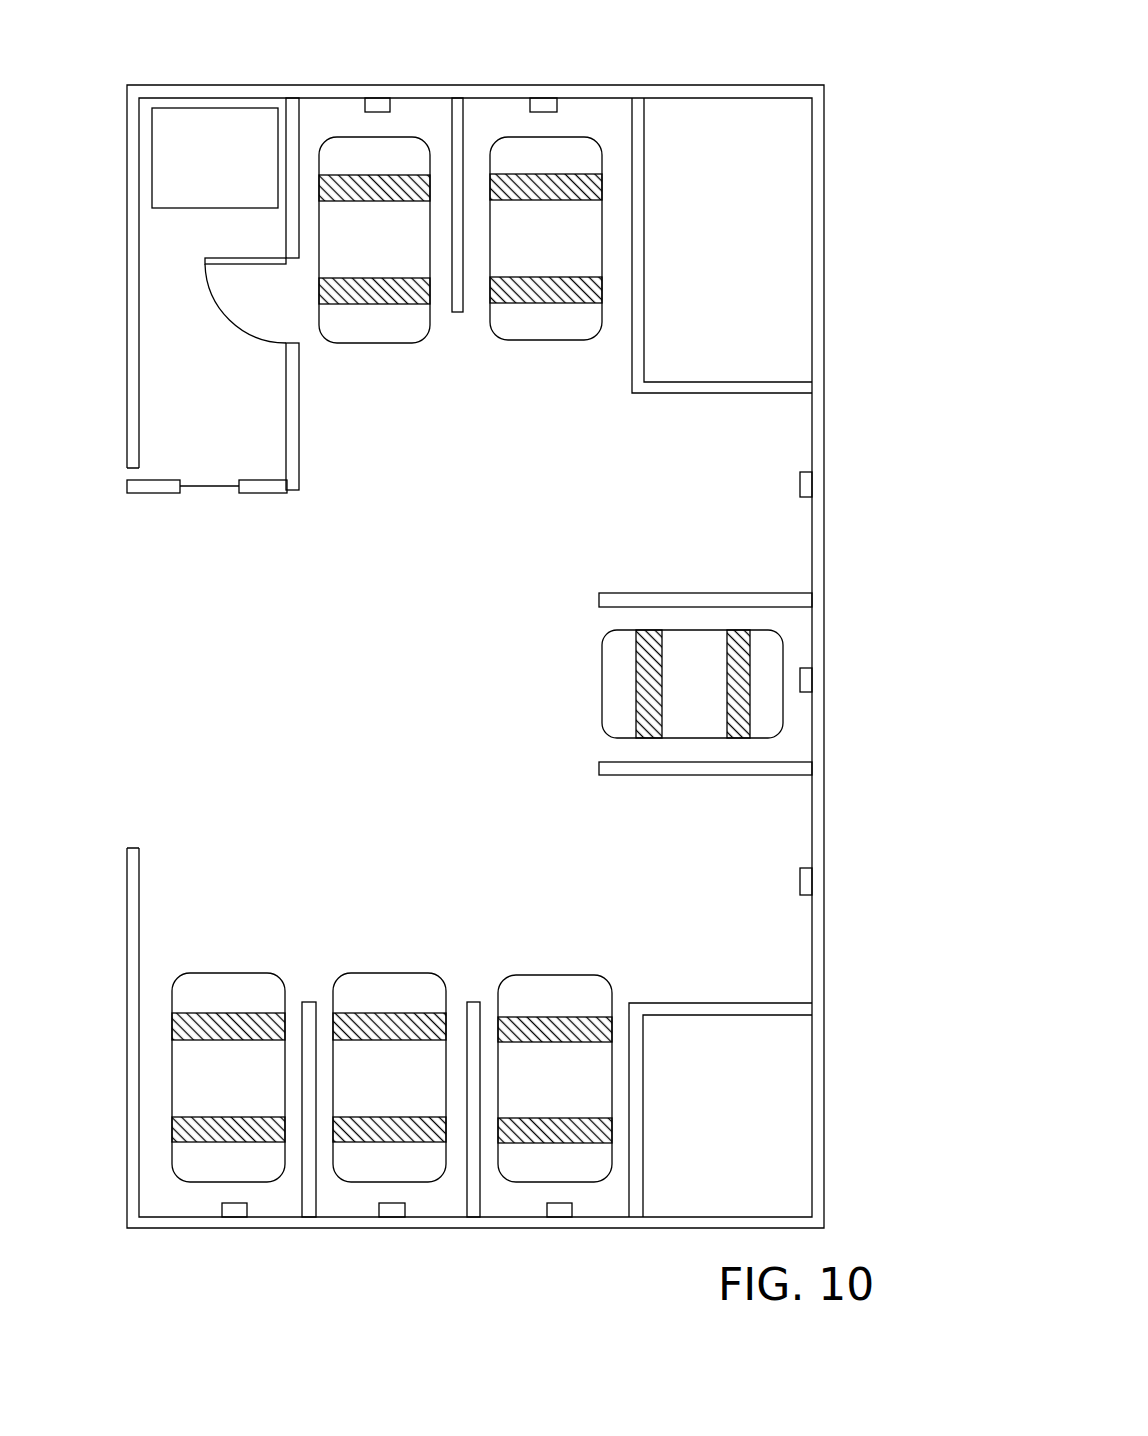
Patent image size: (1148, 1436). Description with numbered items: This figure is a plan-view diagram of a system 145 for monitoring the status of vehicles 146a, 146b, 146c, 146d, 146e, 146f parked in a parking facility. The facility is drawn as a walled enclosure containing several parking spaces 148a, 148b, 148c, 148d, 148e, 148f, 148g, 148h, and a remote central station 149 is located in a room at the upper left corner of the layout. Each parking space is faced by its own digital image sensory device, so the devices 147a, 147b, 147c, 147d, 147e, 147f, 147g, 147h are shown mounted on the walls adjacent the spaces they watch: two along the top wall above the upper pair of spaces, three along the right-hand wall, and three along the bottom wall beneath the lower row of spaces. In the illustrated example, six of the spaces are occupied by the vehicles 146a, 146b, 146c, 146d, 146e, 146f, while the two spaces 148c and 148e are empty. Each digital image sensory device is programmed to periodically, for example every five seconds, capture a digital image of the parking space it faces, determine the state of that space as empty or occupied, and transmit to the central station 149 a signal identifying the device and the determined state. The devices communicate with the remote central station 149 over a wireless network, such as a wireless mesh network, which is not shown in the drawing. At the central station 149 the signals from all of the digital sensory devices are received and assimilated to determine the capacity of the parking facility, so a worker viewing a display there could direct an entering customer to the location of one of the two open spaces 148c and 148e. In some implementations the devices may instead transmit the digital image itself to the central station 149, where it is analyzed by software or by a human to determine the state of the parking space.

The system 145 is at (634, 32).
The vehicle 146a is at (397, 254).
The vehicle 146b is at (570, 254).
The vehicle 146c is at (725, 690).
The vehicle 146d is at (580, 1088).
The vehicle 146e is at (413, 1088).
The vehicle 146f is at (250, 1088).
The digital image sensory device 147a is at (378, 102).
The digital image sensory device 147b is at (545, 102).
The digital image sensory device 147c is at (812, 485).
The digital image sensory device 147d is at (812, 680).
The digital image sensory device 147e is at (812, 885).
The digital image sensory device 147f is at (560, 1218).
The digital image sensory device 147g is at (392, 1218).
The digital image sensory device 147h is at (233, 1218).
The parking space 148a is at (391, 271).
The parking space 148b is at (546, 278).
The parking space 148c is at (713, 481).
The parking space 148d is at (636, 688).
The parking space 148e is at (745, 905).
The parking space 148f is at (549, 1049).
The parking space 148g is at (380, 1047).
The parking space 148h is at (224, 1047).
The remote central station 149 is at (242, 197).